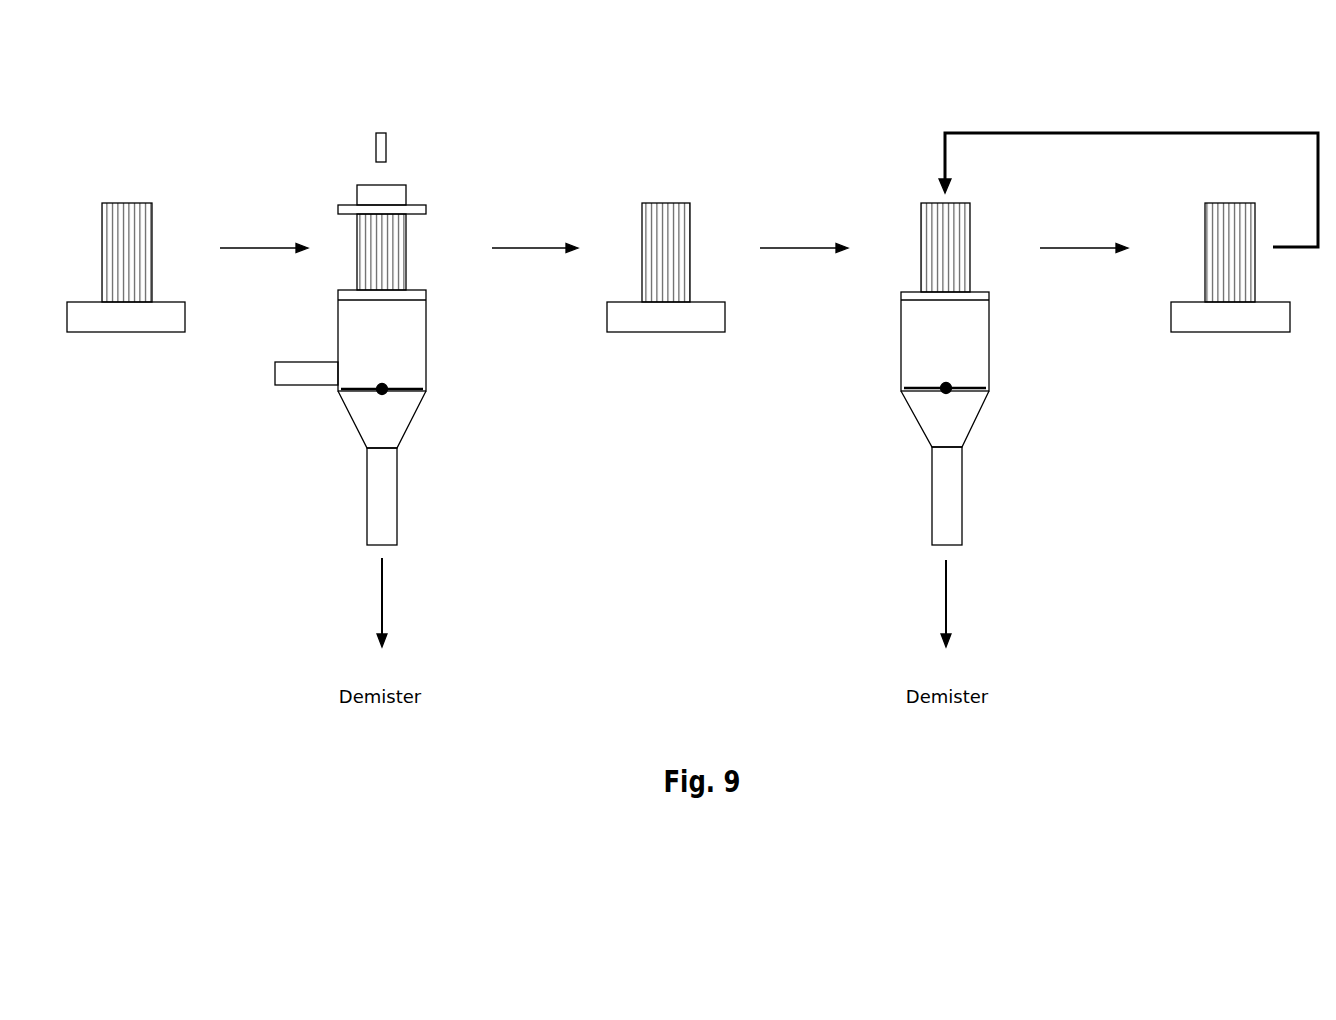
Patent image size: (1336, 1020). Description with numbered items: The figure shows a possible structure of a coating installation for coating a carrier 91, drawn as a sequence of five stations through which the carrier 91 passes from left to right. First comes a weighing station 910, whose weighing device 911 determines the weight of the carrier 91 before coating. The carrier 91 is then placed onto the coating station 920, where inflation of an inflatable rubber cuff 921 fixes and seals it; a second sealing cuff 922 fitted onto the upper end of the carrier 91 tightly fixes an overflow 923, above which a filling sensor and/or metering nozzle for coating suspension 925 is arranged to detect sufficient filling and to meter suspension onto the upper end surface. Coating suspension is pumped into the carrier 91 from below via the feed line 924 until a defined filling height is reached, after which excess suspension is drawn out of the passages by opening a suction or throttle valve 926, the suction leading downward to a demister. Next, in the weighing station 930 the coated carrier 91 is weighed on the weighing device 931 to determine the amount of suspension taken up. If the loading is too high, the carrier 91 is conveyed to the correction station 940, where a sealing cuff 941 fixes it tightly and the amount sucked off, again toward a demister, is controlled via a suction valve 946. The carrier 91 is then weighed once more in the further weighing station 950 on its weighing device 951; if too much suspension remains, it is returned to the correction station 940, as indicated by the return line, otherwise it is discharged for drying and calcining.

The carrier 91 is at (678, 252).
The weighing station 910 is at (126, 228).
The weighing device 911 is at (126, 339).
The coating station 920 is at (354, 312).
The inflatable rubber cuff 921 is at (420, 404).
The second sealing cuff 922 is at (425, 191).
The overflow 923 is at (340, 173).
The feed line 924 is at (267, 393).
The filling sensor and/or metering nozzle for coating suspension 925 is at (323, 130).
The suction or throttle valve 926 is at (427, 378).
The weighing station 930 is at (670, 224).
The weighing device 931 is at (670, 335).
The correction station 940 is at (986, 312).
The sealing cuff 941 is at (982, 403).
The suction valve 946 is at (987, 378).
The further weighing station 950 is at (1235, 227).
The weighing device 951 is at (1235, 338).